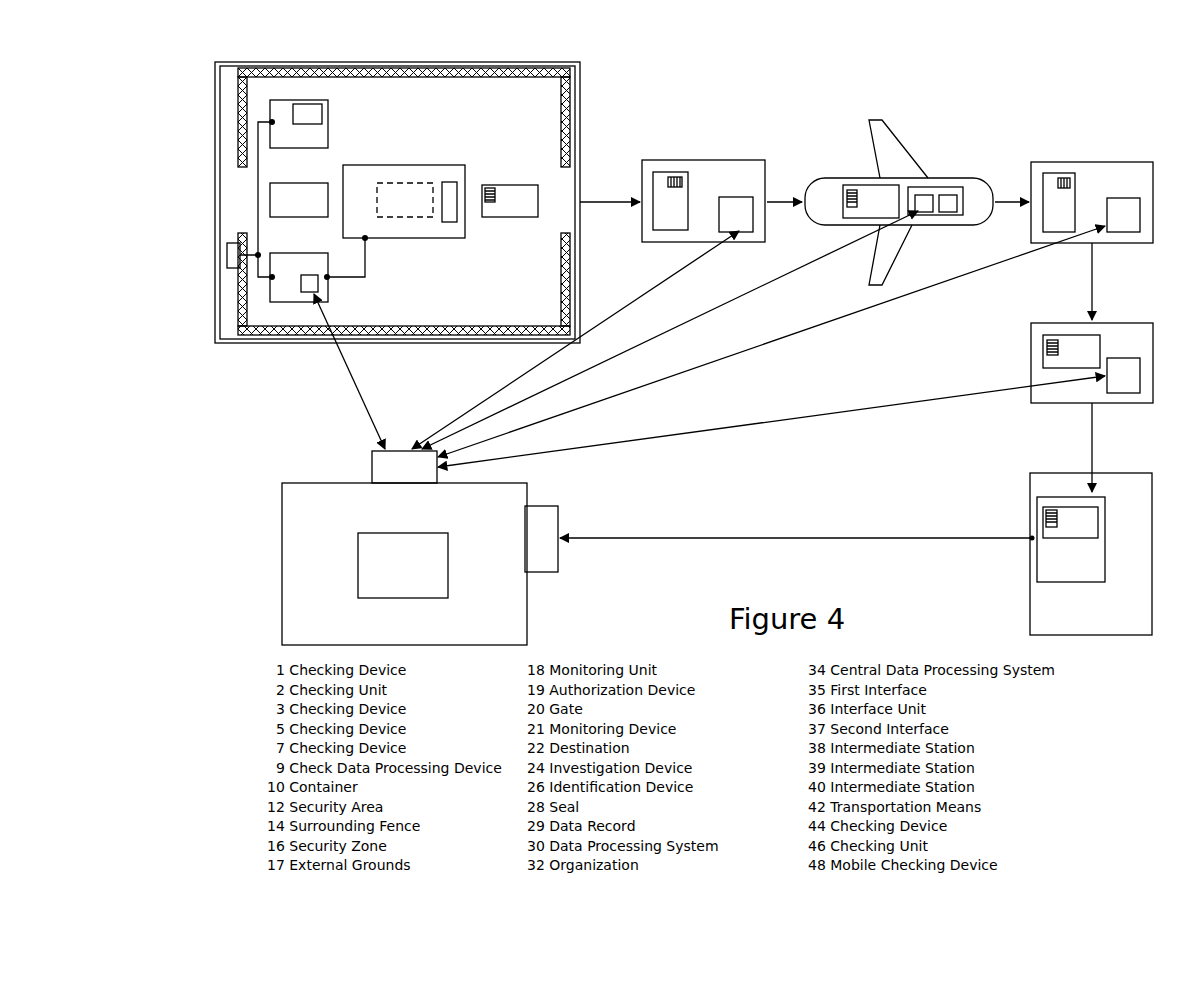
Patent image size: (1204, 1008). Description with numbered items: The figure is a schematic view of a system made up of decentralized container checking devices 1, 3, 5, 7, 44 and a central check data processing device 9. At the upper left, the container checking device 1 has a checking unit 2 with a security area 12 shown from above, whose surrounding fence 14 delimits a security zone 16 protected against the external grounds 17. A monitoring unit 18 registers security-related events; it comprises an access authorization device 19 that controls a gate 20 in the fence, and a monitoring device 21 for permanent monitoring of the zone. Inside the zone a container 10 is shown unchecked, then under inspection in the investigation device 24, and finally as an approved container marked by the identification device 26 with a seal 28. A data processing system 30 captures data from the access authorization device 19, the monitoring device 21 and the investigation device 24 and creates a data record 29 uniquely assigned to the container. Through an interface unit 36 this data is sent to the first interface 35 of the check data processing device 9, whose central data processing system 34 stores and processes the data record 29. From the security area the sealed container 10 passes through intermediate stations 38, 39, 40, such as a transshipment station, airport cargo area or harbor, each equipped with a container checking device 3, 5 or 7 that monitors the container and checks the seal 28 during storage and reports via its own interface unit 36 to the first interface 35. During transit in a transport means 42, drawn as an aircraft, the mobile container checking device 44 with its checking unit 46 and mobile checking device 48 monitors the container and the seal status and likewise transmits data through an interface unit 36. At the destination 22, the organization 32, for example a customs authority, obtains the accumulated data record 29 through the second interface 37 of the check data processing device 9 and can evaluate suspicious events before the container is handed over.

The container checking device 1 is at (248, 55).
The checking unit 2 is at (345, 62).
The container checking device 3 is at (743, 195).
The container checking device 5 is at (1128, 195).
The container checking device 7 is at (1142, 380).
The check data processing device 9 is at (275, 626).
The container 10 is at (287, 192).
The security area 12 is at (524, 66).
The surrounding fence 14 is at (420, 68).
The security zone 16 is at (465, 112).
The external grounds 17 is at (176, 119).
The monitoring unit 18 is at (336, 128).
The access authorization device 19 is at (227, 255).
The gate 20 is at (238, 200).
The monitoring device 21 is at (312, 104).
The destination 22 is at (1135, 482).
The investigation device 24 is at (428, 170).
The identification device 26 is at (447, 222).
The seal 28 is at (490, 186).
The data record 29 is at (448, 563).
The data processing system 30 is at (288, 258).
The organization 32 is at (1053, 583).
The central data processing system 34 is at (282, 562).
The first interface 35 is at (372, 468).
The interface unit 36 is at (320, 287).
The second interface 37 is at (543, 572).
The intermediate station 38 is at (710, 180).
The intermediate station 39 is at (1100, 172).
The intermediate station 40 is at (1125, 335).
The transport means 42 is at (955, 182).
The mobile container checking device 44 is at (926, 178).
The checking unit 46 is at (935, 190).
The mobile checking device 48 is at (948, 212).